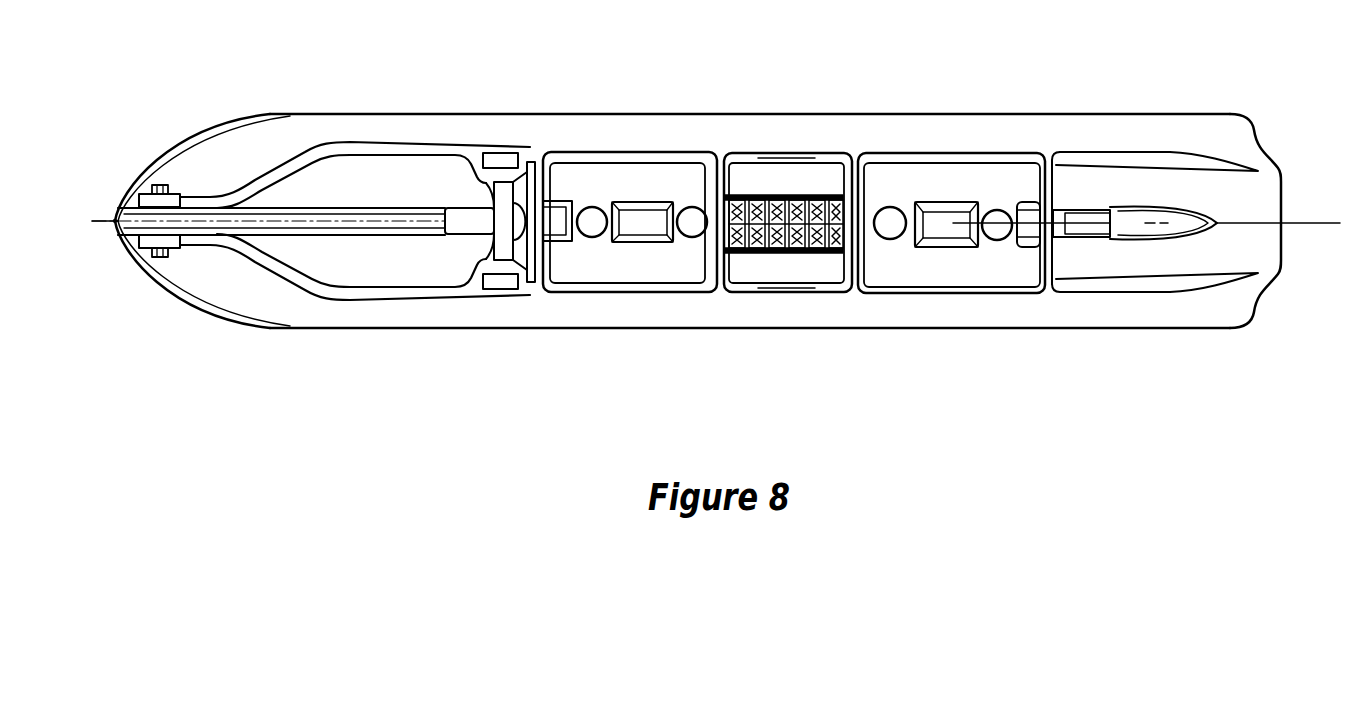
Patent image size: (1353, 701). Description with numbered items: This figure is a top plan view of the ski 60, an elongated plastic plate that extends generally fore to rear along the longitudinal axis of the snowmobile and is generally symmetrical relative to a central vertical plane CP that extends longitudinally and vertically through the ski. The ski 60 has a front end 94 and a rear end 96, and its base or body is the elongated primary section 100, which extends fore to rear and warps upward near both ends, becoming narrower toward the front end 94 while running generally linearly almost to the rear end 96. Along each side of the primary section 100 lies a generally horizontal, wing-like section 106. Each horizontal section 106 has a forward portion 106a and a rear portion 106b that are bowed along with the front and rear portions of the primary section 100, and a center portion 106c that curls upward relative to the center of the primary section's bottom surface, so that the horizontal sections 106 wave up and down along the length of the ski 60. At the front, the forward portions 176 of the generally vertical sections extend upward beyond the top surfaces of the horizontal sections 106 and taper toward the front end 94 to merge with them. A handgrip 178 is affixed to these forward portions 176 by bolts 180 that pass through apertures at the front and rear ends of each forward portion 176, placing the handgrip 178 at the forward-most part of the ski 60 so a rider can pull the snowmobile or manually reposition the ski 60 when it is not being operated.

The ski 60 is at (968, 75).
The front end 94 is at (115, 222).
The rear end 96 is at (1283, 197).
The primary section 100 is at (371, 178).
The generally horizontal section 106 is at (475, 132).
The forward portion of the generally horizontal section 106a is at (181, 158).
The rear portion of the generally horizontal section 106b is at (1195, 123).
The center portion of the generally horizontal section 106c is at (708, 133).
The forward portion of the generally vertical section 176 is at (314, 160).
The handgrip 178 is at (255, 210).
The bolt 180 is at (158, 260).
The central vertical plane CP is at (115, 220).